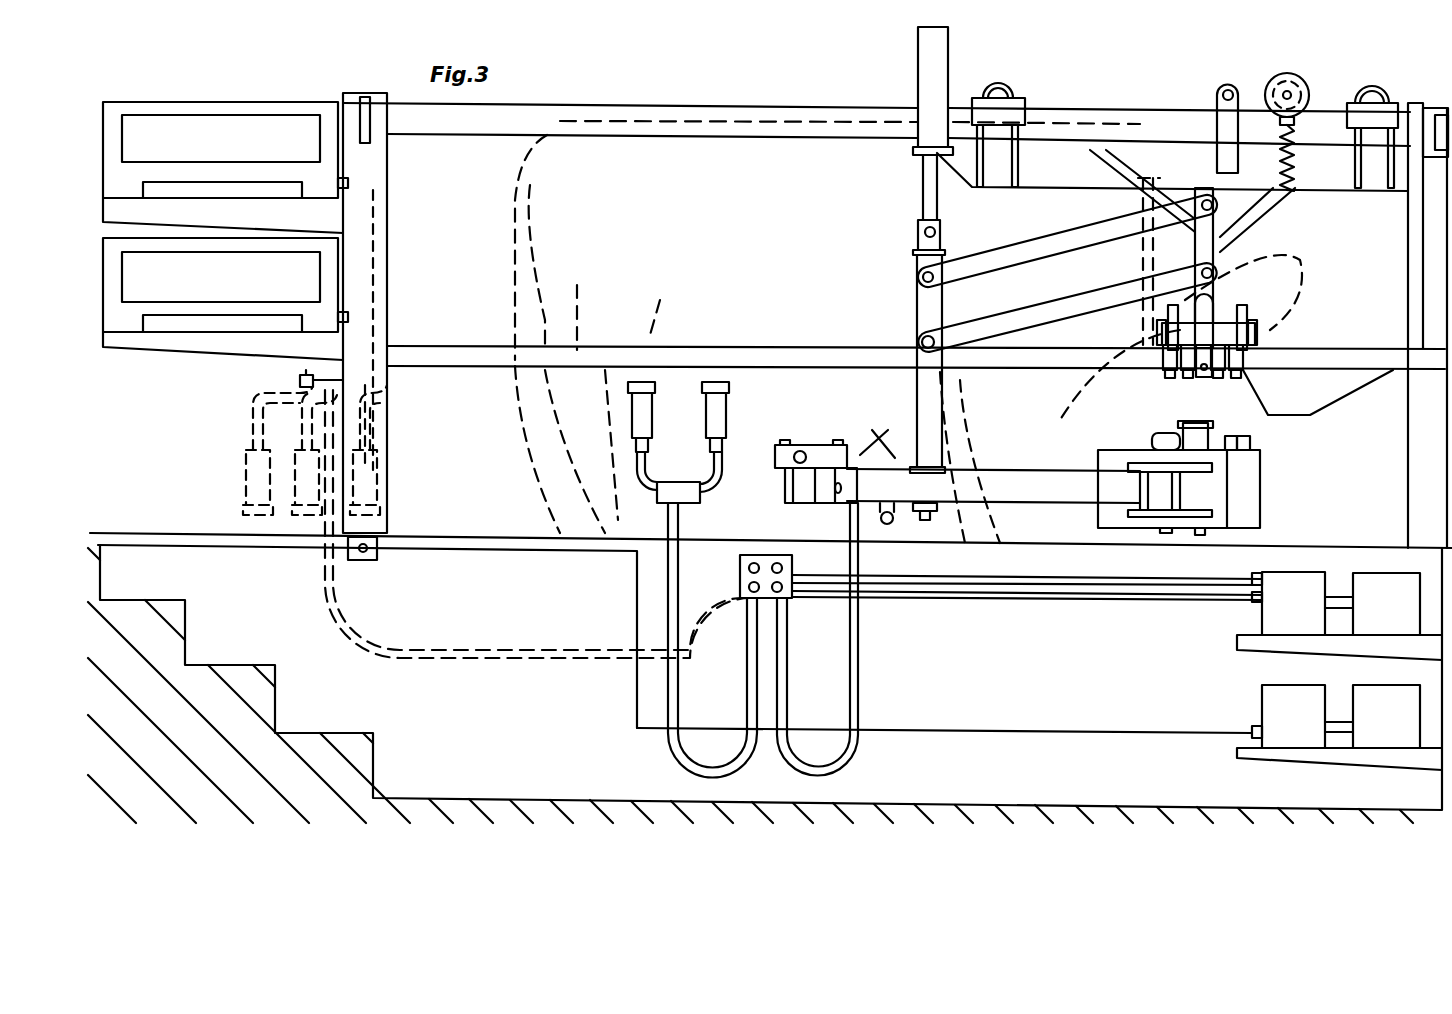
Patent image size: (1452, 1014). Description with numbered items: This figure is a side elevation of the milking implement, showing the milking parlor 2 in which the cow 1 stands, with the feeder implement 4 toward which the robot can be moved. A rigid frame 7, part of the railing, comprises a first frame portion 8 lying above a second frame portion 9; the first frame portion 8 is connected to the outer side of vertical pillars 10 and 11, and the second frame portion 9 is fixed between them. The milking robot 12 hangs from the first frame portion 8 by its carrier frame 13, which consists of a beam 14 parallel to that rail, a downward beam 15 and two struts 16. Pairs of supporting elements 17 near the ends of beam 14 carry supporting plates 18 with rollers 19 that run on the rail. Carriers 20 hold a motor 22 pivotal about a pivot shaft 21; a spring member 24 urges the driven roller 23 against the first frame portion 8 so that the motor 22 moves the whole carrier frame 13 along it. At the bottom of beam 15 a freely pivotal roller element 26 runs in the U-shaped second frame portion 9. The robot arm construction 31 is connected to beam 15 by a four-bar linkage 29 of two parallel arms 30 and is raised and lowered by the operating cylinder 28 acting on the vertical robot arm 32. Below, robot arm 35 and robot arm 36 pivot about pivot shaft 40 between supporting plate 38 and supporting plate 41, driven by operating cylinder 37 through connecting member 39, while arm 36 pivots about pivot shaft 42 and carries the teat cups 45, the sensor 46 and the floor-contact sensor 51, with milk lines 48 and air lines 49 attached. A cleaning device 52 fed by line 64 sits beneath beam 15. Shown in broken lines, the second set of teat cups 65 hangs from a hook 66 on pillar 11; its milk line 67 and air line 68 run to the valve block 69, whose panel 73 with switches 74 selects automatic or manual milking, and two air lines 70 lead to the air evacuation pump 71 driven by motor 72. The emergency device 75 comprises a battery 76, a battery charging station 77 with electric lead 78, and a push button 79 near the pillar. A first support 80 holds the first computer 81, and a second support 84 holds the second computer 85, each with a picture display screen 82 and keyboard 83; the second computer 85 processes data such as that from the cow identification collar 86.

The cow 1 is at (876, 124).
The milking parlor 2 is at (500, 500).
The feeder implement 4 is at (1345, 380).
The frame 7 is at (481, 329).
The first frame portion 8 is at (690, 140).
The second frame portion 9 is at (800, 308).
The vertical pillar 10 is at (1410, 450).
The vertical pillar 11 is at (388, 445).
The milking robot 12 is at (1211, 483).
The carrier frame 13 is at (1360, 194).
The beam 14 is at (1043, 183).
The beam 15 is at (1210, 237).
The struts 16 is at (1120, 190).
The supporting elements 17 is at (1015, 173).
The supporting plates 18 is at (1030, 118).
The rollers 19 is at (1000, 88).
The carriers 20 is at (1210, 128).
The pivot shaft 21 is at (1215, 90).
The motor 22 is at (1302, 82).
The roller 23 is at (1300, 88).
The spring member 24 is at (1295, 140).
The freely pivotal roller element 26 is at (1197, 389).
The operating cylinder 28 is at (918, 50).
The four-bar linkage 29 is at (1067, 273).
The arms 30 is at (1005, 250).
The robot arm construction 31 is at (1060, 450).
The vertical robot arm 32 is at (917, 300).
The robot arm 35 is at (1045, 518).
The robot arm 36 is at (1258, 512).
The operating cylinder 37 is at (828, 425).
The supporting plate 38 is at (878, 440).
The connecting member 39 is at (800, 486).
The pivot shaft 40 is at (925, 522).
The supporting plate 41 is at (887, 525).
The pivot shaft 42 is at (1166, 535).
The teat cups 45 is at (1250, 442).
The sensor 46 is at (1230, 410).
The milk lines 48 is at (712, 640).
The air lines 49 is at (858, 712).
The sensor 51 is at (1200, 535).
The cleaning device 52 is at (1236, 333).
The line 64 is at (1210, 300).
The second set of teat cups 65 is at (245, 480).
The hook 66 is at (298, 380).
The milk line 67 is at (537, 545).
The air line 68 is at (460, 670).
The valve block 69 is at (728, 578).
The air lines 70 is at (1080, 592).
The air evacuation pump 71 is at (1262, 609).
The motor 72 is at (1385, 573).
The panel 73 is at (787, 574).
The switches 74 is at (777, 566).
The emergency device 75 is at (1298, 770).
The battery 76 is at (1380, 690).
The battery charging station 77 is at (1262, 697).
The electric lead 78 is at (1108, 725).
The push button 79 is at (363, 560).
The first support 80 is at (330, 218).
The first computer 81 is at (270, 235).
The picture display screen 82 is at (220, 134).
The keyboard 83 is at (232, 195).
The second support 84 is at (185, 352).
The second computer 85 is at (128, 340).
The cow identification collar 86 is at (1120, 362).